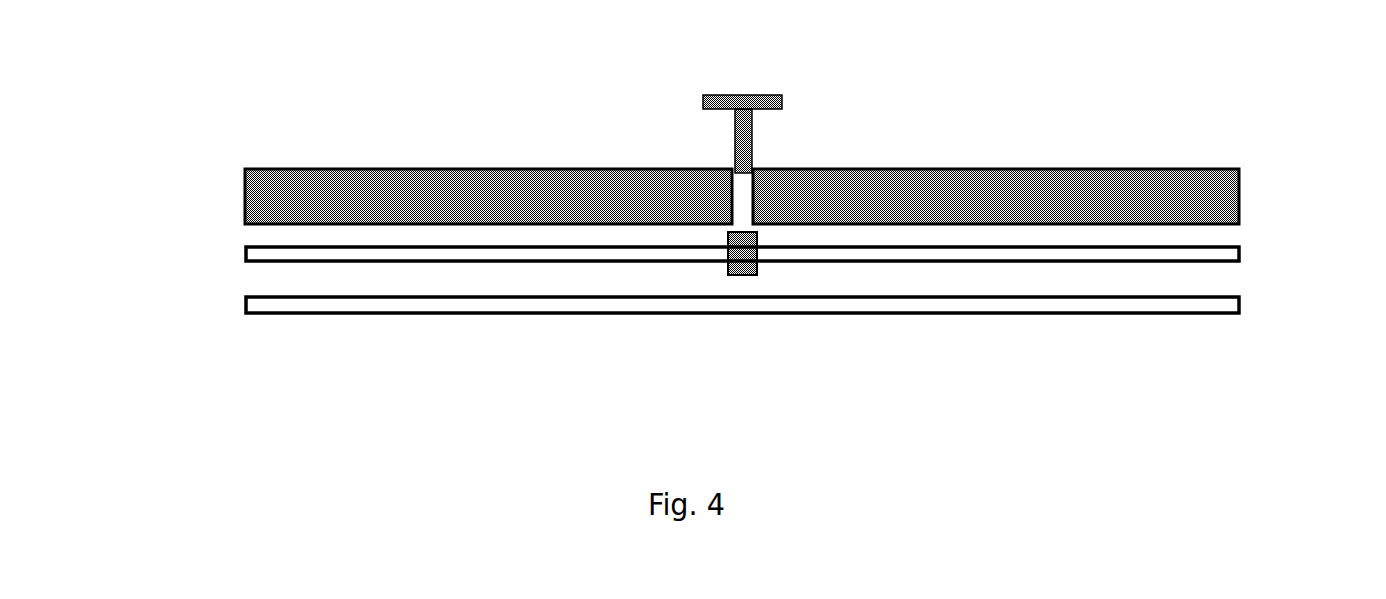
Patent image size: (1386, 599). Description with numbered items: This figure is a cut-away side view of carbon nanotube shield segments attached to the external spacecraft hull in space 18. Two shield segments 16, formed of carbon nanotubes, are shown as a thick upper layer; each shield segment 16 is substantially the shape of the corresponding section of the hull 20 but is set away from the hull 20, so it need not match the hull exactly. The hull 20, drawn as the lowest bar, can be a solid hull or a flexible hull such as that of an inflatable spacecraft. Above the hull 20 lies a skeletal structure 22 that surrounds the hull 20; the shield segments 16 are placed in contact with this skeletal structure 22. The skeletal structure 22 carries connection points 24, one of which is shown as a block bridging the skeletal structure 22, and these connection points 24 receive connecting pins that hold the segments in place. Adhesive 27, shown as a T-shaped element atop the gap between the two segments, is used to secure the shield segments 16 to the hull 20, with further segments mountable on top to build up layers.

The shield segment 16 is at (359, 167).
The external spacecraft hull in space 18 is at (752, 221).
The hull 20 is at (1274, 287).
The skeletal structure 22 is at (234, 254).
The connection points 24 is at (710, 283).
The adhesive 27 is at (693, 99).